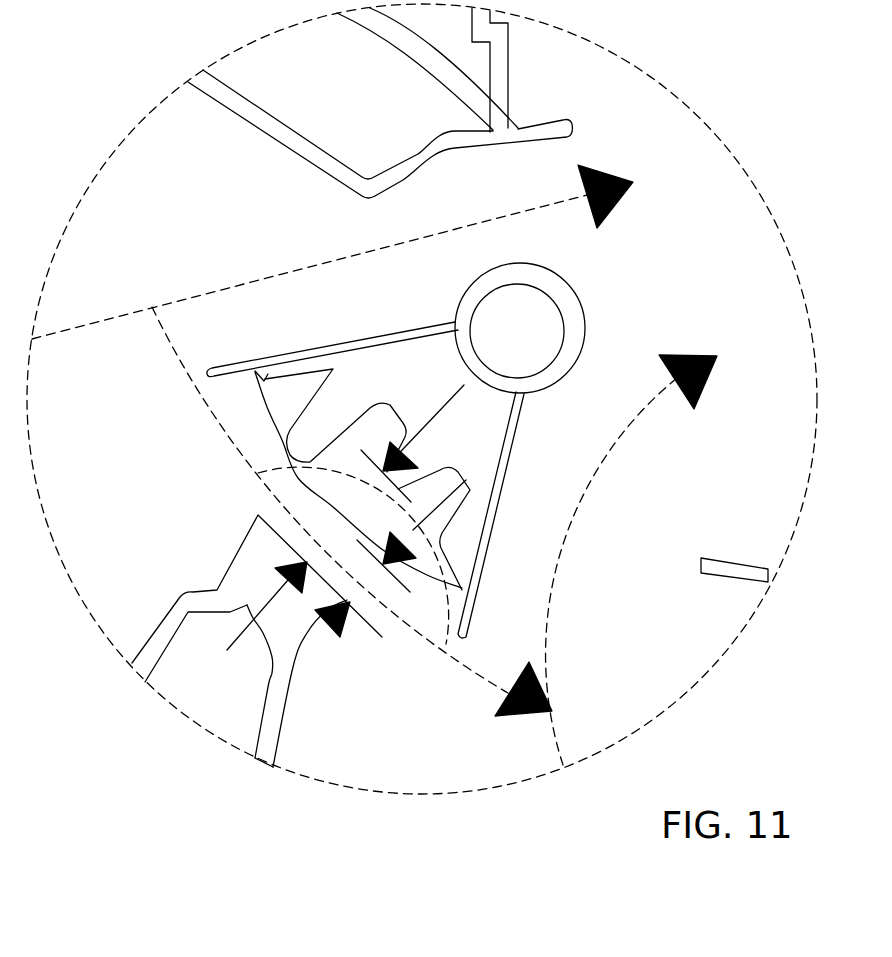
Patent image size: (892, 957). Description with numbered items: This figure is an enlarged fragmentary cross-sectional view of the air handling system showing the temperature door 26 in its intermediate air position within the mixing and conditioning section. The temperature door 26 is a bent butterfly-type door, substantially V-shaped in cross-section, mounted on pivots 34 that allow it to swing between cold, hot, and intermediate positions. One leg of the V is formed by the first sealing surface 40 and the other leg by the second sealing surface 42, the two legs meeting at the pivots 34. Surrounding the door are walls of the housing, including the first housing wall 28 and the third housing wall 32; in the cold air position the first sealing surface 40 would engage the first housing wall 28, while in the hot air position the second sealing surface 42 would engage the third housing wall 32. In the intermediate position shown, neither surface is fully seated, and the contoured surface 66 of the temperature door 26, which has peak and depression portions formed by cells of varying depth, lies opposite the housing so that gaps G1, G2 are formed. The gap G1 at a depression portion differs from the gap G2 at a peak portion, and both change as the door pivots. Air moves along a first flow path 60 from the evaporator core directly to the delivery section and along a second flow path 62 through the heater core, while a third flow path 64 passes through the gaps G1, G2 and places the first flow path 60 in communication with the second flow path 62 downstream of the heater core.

The temperature door 26 is at (585, 291).
The first housing wall 28 is at (732, 561).
The third housing wall 32 is at (467, 148).
The pivots 34 is at (537, 343).
The first sealing surface 40 is at (518, 424).
The second sealing surface 42 is at (347, 341).
The first flow path 60 is at (243, 283).
The second flow path 62 is at (576, 511).
The third flow path 64 is at (210, 412).
The contoured surface 66 is at (294, 476).
The gap G1 is at (278, 583).
The gap G2 is at (306, 648).